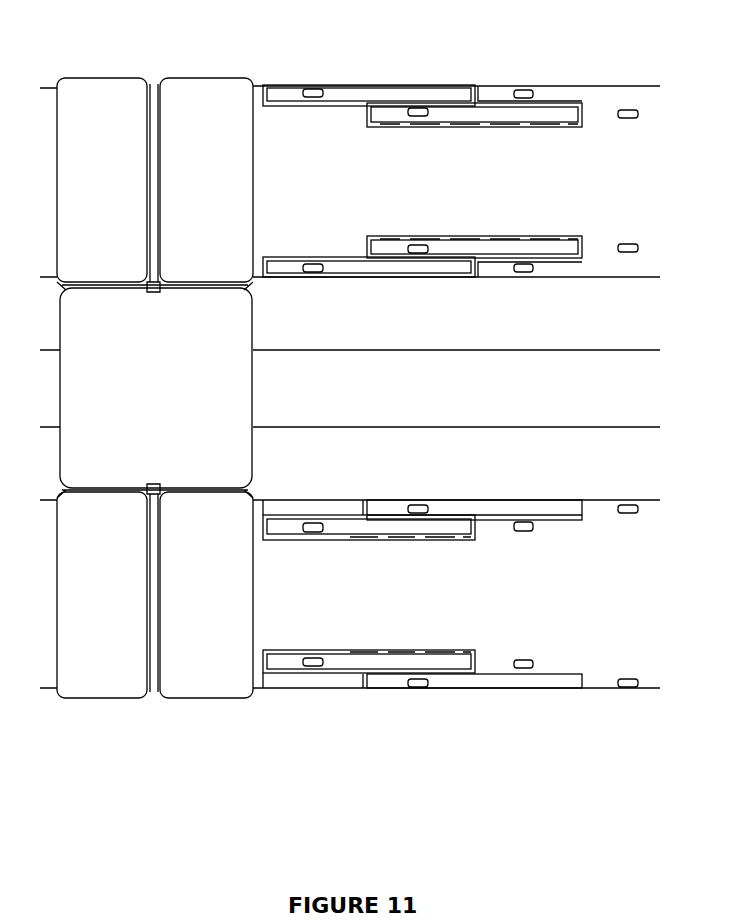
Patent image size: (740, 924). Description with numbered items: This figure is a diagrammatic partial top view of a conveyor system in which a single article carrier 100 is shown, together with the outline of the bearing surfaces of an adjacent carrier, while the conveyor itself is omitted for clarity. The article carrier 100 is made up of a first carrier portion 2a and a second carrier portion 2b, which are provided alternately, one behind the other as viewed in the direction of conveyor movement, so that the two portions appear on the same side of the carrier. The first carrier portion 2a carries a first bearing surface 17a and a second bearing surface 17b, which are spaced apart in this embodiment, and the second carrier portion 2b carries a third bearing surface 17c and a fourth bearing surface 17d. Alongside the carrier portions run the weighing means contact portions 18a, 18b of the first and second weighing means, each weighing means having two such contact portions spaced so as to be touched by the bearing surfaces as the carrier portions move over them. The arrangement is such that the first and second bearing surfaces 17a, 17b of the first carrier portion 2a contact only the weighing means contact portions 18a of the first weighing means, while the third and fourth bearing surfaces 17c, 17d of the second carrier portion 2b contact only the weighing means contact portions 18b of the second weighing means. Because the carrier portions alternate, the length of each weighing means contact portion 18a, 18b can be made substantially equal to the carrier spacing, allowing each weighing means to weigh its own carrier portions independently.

The first carrier portion 2a is at (205, 87).
The second carrier portion 2b is at (100, 97).
The article carrier 100 is at (164, 732).
The first bearing surface 17a is at (308, 523).
The second bearing surface 17b is at (312, 668).
The third bearing surface 17c is at (418, 505).
The fourth bearing surface 17d is at (418, 688).
The weighing means contact portion 18a is at (345, 523).
The weighing means contact portion 18b is at (540, 515).